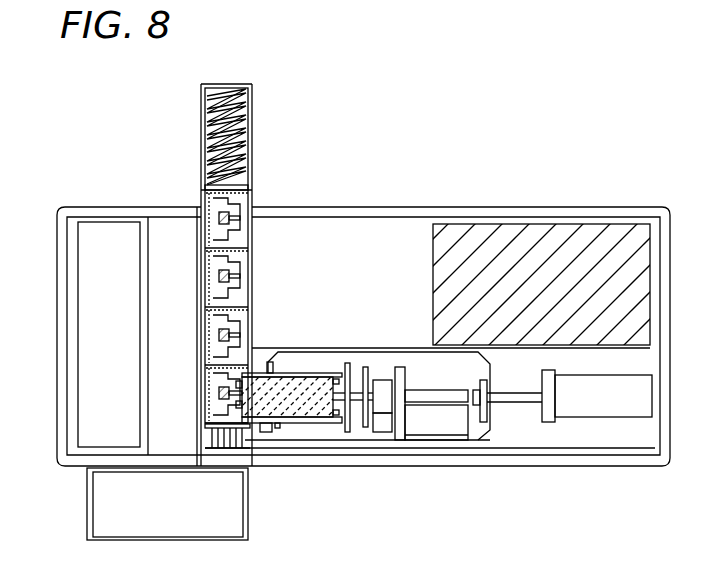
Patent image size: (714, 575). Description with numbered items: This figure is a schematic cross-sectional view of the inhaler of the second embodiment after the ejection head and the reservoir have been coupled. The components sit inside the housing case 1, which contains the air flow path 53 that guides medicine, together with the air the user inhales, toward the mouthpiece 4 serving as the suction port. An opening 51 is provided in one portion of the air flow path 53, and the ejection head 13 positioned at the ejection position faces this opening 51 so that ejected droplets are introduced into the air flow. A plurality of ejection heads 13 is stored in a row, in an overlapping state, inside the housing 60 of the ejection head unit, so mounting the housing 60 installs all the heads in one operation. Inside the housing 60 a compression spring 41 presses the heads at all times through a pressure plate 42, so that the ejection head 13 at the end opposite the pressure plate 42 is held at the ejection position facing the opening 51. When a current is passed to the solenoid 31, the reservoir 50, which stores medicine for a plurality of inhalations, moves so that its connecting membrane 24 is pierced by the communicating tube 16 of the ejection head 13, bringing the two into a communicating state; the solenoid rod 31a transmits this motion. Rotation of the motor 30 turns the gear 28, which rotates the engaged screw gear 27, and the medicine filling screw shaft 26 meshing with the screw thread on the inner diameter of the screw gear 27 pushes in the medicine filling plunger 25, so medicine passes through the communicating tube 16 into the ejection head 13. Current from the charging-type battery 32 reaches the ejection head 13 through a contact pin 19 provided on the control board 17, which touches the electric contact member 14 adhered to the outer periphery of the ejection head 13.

The housing case 1 is at (470, 462).
The mouthpiece 4 is at (87, 517).
The ejection head 13 is at (224, 207).
The electric contact member 14 is at (210, 426).
The communicating tube 16 is at (266, 432).
The control board 17 is at (365, 453).
The contact pin 19 is at (212, 442).
The connecting membrane 24 is at (263, 372).
The medicine filling plunger 25 is at (347, 386).
The medicine filling screw shaft 26 is at (455, 395).
The screw gear 27 is at (383, 390).
The gear 28 is at (382, 433).
The motor 30 is at (430, 432).
The solenoid 31 is at (588, 403).
The cylinder rod 31a is at (520, 400).
The charging-type battery 32 is at (558, 246).
The compression spring 41 is at (210, 101).
The pressure plate 42 is at (213, 173).
The reservoir 50 is at (315, 421).
The opening 51 is at (197, 378).
The air flow path 53 is at (140, 272).
The housing 60 is at (253, 97).